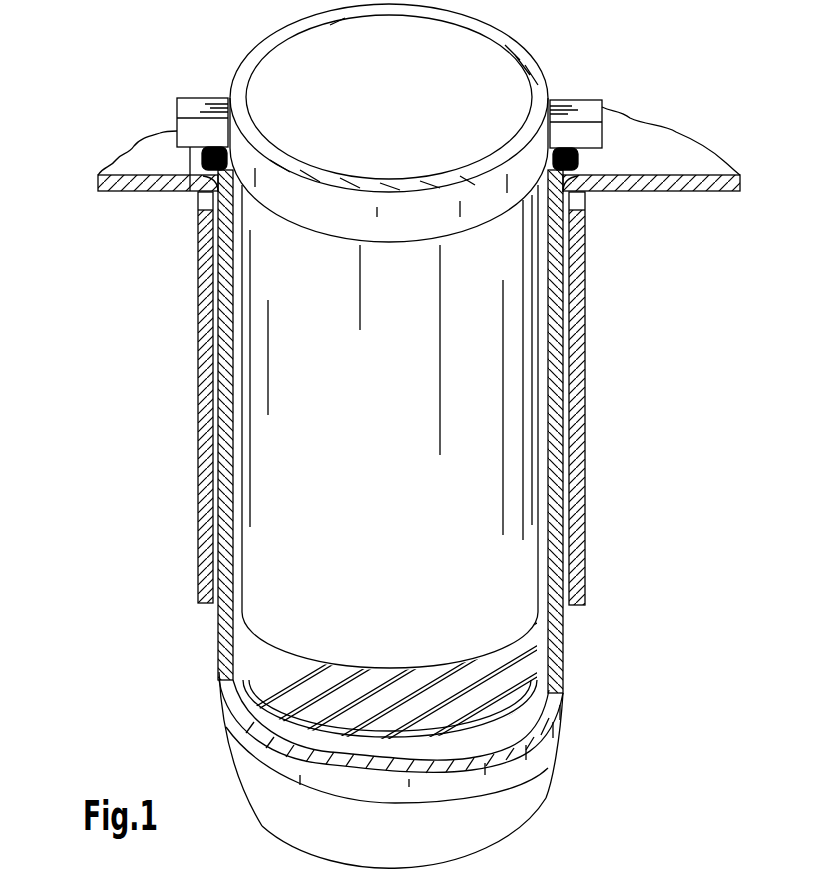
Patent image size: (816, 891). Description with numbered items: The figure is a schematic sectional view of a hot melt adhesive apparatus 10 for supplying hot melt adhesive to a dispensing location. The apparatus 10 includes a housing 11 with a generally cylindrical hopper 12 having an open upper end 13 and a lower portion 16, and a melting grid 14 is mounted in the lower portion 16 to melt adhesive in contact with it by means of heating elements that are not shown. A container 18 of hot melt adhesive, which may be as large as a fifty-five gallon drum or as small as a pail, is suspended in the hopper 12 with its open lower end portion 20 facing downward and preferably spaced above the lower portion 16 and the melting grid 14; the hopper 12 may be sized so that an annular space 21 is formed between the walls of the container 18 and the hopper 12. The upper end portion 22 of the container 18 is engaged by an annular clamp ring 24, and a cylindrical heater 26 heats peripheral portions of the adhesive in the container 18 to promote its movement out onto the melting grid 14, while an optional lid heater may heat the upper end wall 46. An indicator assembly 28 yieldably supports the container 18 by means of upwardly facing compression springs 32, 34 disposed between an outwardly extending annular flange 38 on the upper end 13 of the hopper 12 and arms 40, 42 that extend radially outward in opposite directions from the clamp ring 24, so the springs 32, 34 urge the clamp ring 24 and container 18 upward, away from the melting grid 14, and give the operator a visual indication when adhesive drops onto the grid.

The apparatus 10 is at (690, 115).
The housing 11 is at (150, 142).
The hopper 12 is at (585, 438).
The open upper end 13 is at (544, 236).
The melting grid 14 is at (530, 664).
The lower portion 16 is at (565, 623).
The container 18 is at (265, 437).
The open lower end portion 20 is at (287, 608).
The annular space 21 is at (237, 380).
The upper end portion 22 is at (282, 237).
The clamp ring 24 is at (454, 22).
The heater 26 is at (200, 535).
The indicator assembly 28 is at (610, 146).
The compression spring 32 is at (190, 157).
The compression spring 34 is at (628, 186).
The annular flange 38 is at (588, 182).
The arm 40 is at (200, 98).
The arm 42 is at (585, 100).
The upper end wall 46 is at (480, 75).